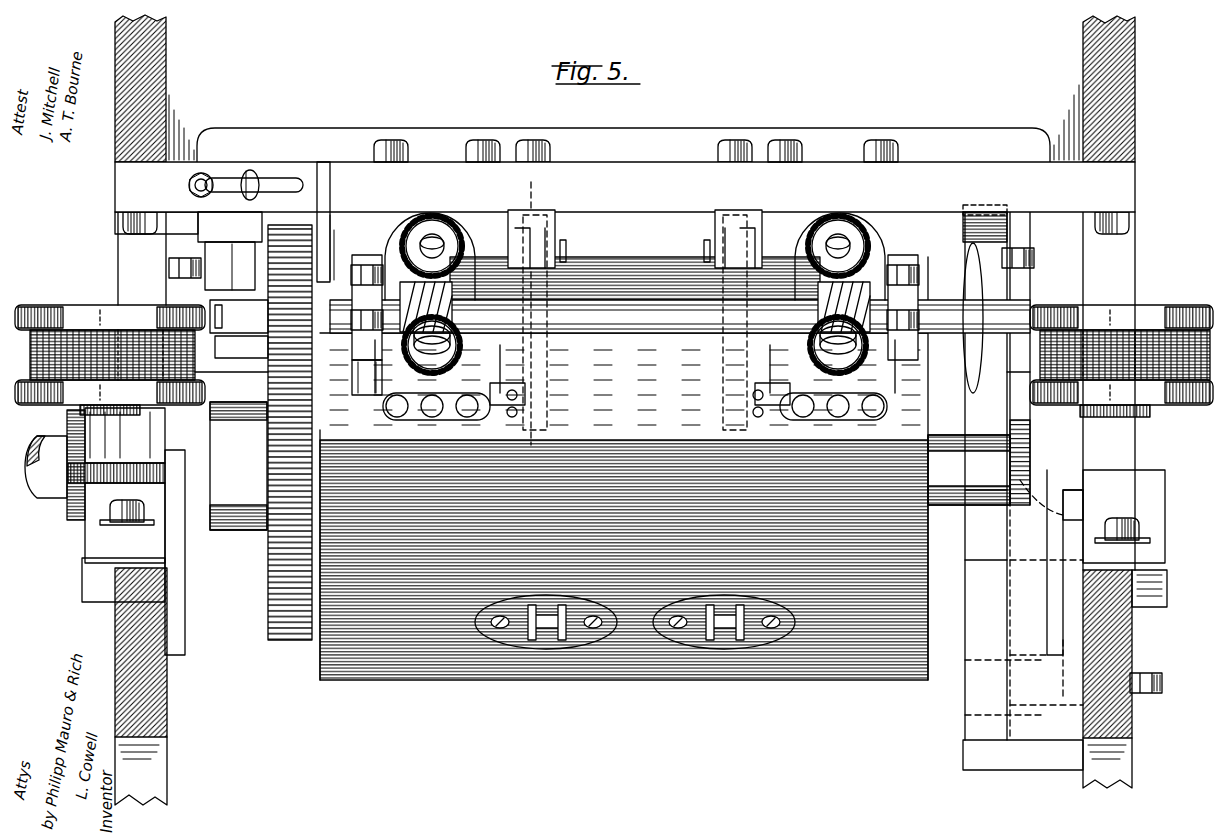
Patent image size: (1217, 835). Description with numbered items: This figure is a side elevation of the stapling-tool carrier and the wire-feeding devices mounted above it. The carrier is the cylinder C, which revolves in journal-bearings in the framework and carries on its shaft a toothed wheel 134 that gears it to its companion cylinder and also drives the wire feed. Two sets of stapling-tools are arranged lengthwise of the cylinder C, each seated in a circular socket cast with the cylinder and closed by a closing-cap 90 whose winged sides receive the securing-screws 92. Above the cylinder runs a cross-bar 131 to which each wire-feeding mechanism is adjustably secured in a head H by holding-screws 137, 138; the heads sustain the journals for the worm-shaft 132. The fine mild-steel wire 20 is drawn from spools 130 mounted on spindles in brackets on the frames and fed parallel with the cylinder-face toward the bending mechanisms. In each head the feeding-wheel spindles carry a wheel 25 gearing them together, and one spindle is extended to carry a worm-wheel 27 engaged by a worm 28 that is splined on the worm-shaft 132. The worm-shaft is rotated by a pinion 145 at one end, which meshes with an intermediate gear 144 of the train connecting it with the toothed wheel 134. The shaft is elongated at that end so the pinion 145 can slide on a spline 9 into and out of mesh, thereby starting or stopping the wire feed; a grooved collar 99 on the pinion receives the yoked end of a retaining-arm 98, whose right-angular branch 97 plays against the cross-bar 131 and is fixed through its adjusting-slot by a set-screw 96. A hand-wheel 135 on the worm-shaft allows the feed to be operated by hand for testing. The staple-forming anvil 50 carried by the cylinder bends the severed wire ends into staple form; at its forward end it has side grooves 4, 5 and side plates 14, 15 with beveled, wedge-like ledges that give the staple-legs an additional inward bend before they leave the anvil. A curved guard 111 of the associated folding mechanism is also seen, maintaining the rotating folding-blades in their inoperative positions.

The side groove 4 is at (548, 396).
The side groove 5 is at (520, 410).
The spline 9 is at (531, 190).
The side plate 14 is at (568, 242).
The side plate 15 is at (635, 239).
The wire 20 is at (215, 372).
The wheel 25 is at (462, 357).
The worm-wheel 27 is at (635, 246).
The worm 28 is at (396, 302).
The anvil 50 is at (635, 322).
The closing-cap 90 is at (566, 600).
The securing-screw 92 is at (500, 614).
The set-screw 96 is at (258, 176).
The right-angular branch 97 is at (188, 185).
The retaining-arm 98 is at (330, 232).
The grooved collar 99 is at (355, 362).
The curved guard 111 is at (1005, 605).
The spool 130 is at (1163, 300).
The cross-bar 131 is at (625, 187).
The worm-shaft 132 is at (680, 316).
The toothed wheel 134 is at (291, 640).
The hand-wheel 135 is at (965, 280).
The holding-screw 137 is at (374, 150).
The holding-screw 138 is at (466, 152).
The intermediate gear 144 is at (270, 233).
The pinion 145 is at (268, 355).
The cylinder C is at (624, 468).
The head H is at (635, 256).